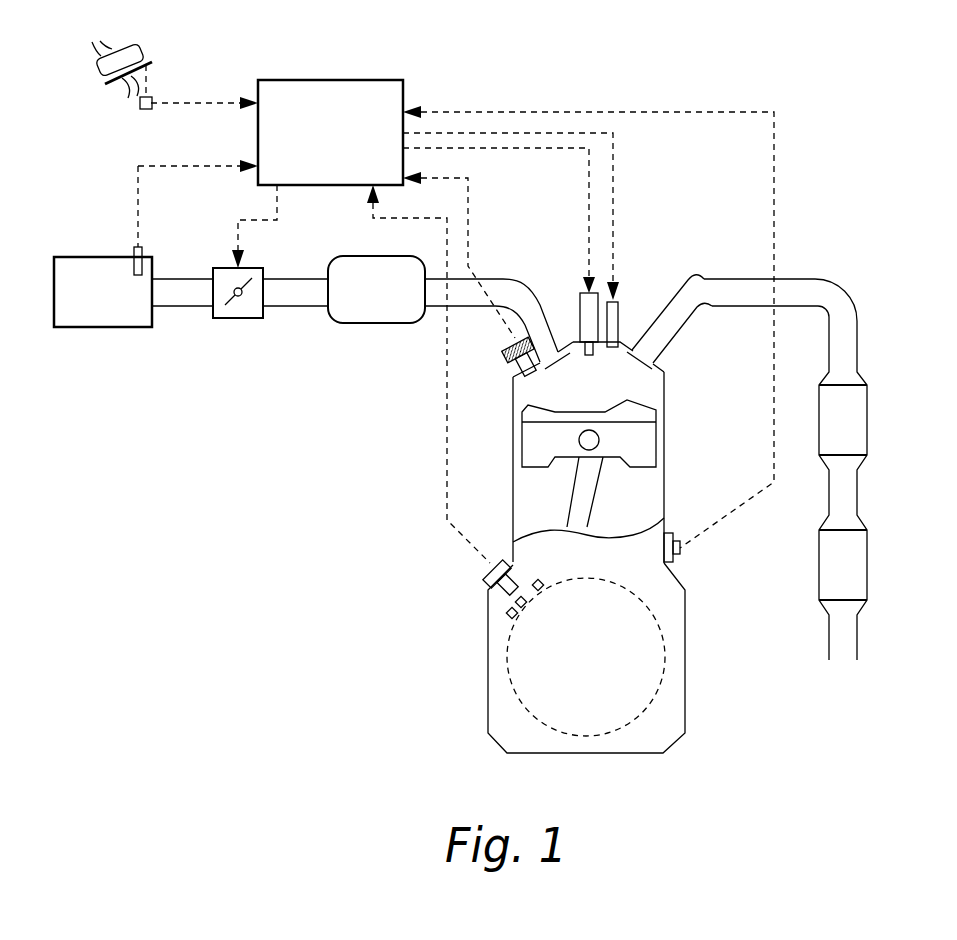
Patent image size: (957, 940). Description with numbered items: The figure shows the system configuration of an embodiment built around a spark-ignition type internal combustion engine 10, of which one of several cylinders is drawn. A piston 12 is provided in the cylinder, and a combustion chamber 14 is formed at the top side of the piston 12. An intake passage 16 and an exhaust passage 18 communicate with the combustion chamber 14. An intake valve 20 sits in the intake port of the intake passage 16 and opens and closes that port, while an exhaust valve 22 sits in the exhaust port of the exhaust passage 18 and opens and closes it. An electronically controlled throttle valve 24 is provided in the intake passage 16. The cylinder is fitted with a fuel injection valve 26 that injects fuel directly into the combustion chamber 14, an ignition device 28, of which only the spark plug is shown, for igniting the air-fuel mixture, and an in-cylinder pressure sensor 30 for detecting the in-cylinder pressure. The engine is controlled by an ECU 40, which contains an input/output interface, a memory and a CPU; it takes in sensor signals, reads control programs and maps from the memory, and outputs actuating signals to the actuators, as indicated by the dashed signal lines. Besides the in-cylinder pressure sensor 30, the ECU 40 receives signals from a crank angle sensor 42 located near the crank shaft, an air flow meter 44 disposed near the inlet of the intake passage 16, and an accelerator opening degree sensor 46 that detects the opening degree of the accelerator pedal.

The internal combustion engine 10 is at (358, 459).
The piston 12 is at (640, 447).
The combustion chamber 14 is at (640, 380).
The intake passage 16 is at (438, 292).
The exhaust passage 18 is at (790, 283).
The intake valve 20 is at (545, 328).
The exhaust valve 22 is at (681, 293).
The throttle valve 24 is at (227, 268).
The fuel injection valve 26 is at (628, 295).
The ignition device 28 is at (580, 308).
The in-cylinder pressure sensor 30 is at (515, 367).
The ECU 40 is at (330, 80).
The crank angle sensor 42 is at (487, 580).
The air flow meter 44 is at (135, 247).
The accelerator opening degree sensor 46 is at (147, 110).